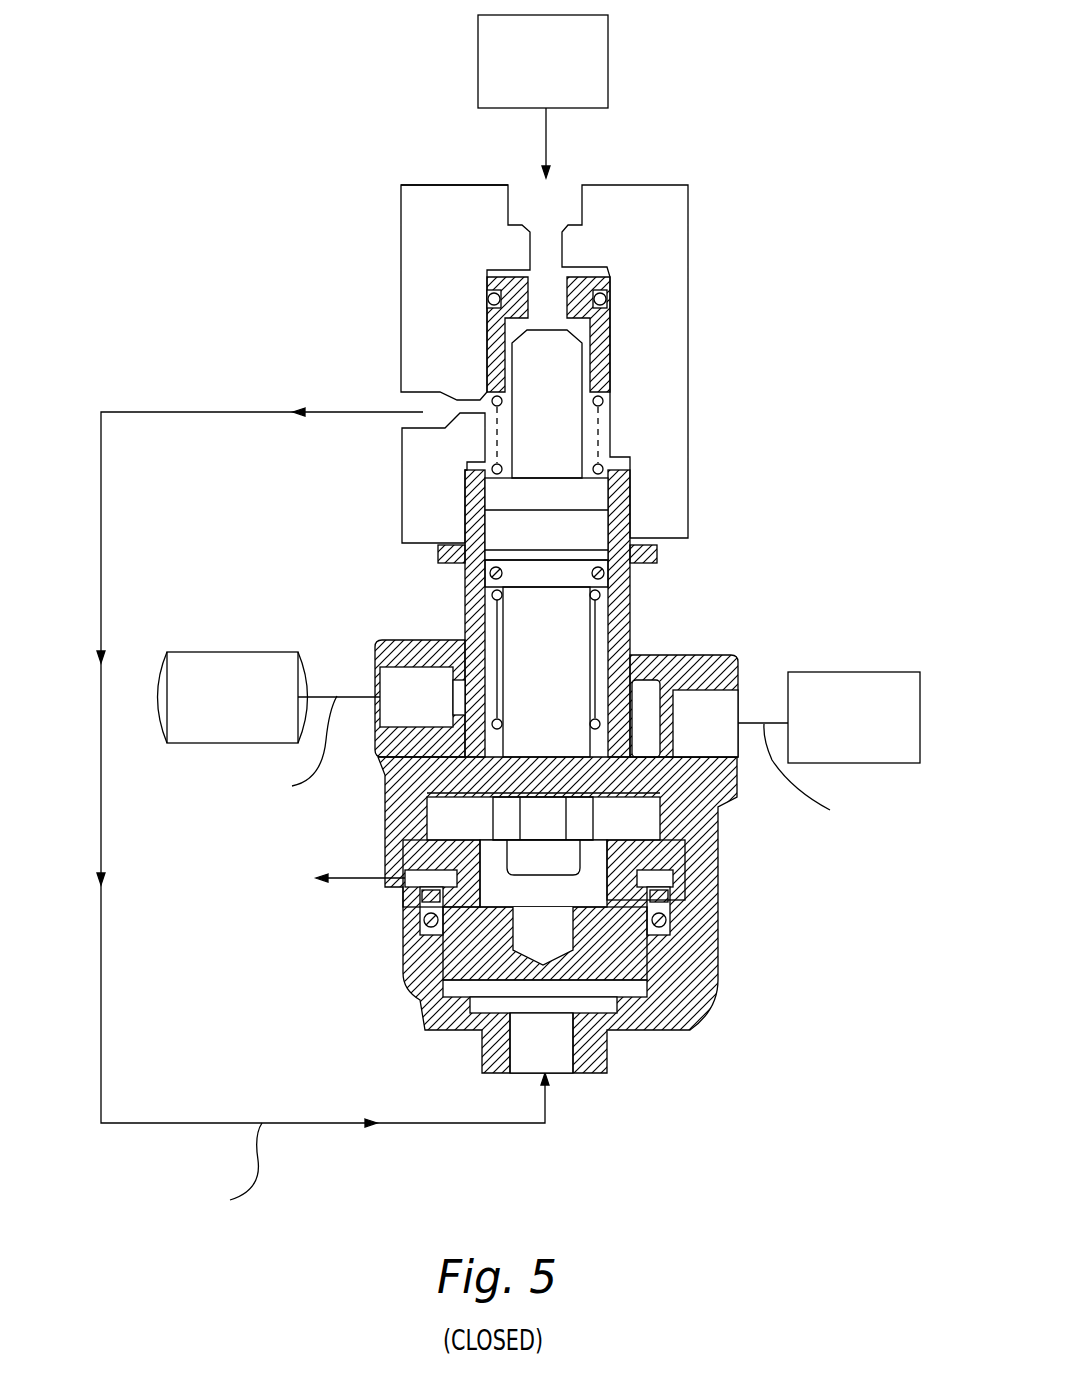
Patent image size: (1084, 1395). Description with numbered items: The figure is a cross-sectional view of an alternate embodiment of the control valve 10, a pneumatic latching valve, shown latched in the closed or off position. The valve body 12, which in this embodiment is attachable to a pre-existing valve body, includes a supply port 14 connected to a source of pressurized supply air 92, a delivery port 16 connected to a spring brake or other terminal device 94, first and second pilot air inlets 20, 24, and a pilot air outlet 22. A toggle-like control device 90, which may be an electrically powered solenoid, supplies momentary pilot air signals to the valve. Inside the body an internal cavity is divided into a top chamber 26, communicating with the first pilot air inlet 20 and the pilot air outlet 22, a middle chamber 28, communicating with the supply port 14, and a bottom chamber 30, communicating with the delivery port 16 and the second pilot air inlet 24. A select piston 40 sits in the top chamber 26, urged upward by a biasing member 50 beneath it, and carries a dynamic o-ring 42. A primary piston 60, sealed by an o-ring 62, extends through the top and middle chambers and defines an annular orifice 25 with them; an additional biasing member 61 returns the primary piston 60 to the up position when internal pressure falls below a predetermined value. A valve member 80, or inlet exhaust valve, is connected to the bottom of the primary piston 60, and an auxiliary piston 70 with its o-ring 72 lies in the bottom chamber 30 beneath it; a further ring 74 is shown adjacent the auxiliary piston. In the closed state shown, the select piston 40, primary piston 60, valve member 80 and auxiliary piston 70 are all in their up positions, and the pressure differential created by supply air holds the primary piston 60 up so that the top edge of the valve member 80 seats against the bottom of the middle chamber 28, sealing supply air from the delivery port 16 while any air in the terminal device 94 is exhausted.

The control valve 10 is at (203, 152).
The valve body 12 is at (672, 215).
The supply port 14 is at (378, 662).
The delivery port 16 is at (738, 760).
The first pilot air inlet 20 is at (505, 183).
The pilot air outlet 22 is at (487, 385).
The second pilot air inlet 24 is at (578, 1075).
The annular orifice 25 is at (495, 323).
The top chamber 26 is at (497, 437).
The middle chamber 28 is at (472, 625).
The bottom chamber 30 is at (443, 822).
The select piston 40 is at (600, 345).
The o-ring 42 is at (603, 300).
The biasing member 50 is at (618, 478).
The primary piston 60 is at (588, 520).
The additional biasing member 61 is at (597, 635).
The o-ring 62 is at (603, 569).
The auxiliary piston 70 is at (458, 1022).
The o-ring 72 is at (428, 962).
The retaining ring 74 is at (428, 900).
The valve member 80 is at (640, 800).
The control device 90 is at (610, 62).
The source of pressurized supply air 92 is at (235, 652).
The terminal device 94 is at (862, 672).